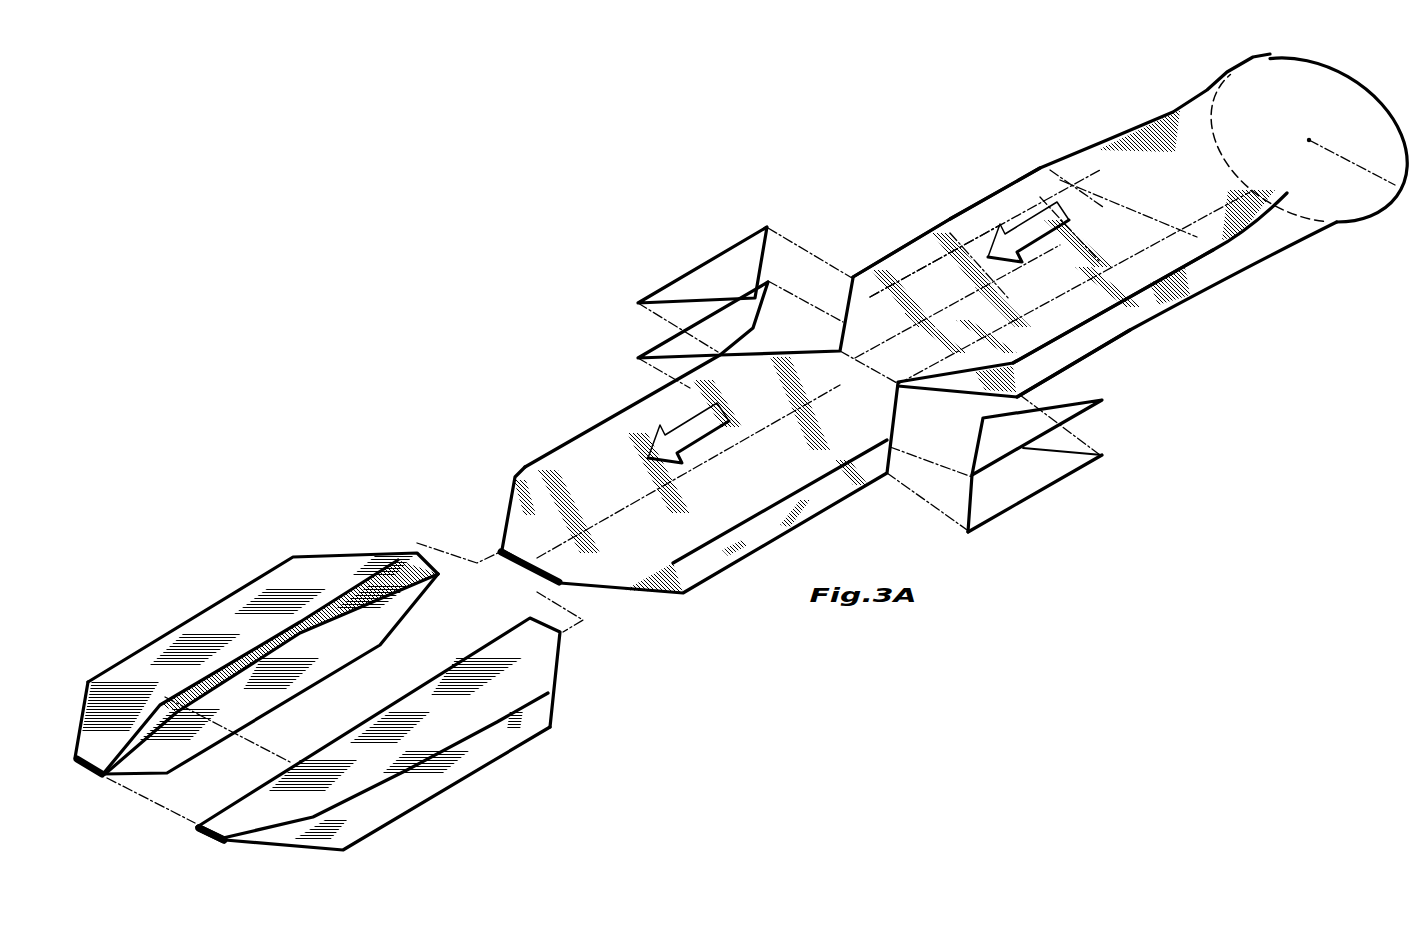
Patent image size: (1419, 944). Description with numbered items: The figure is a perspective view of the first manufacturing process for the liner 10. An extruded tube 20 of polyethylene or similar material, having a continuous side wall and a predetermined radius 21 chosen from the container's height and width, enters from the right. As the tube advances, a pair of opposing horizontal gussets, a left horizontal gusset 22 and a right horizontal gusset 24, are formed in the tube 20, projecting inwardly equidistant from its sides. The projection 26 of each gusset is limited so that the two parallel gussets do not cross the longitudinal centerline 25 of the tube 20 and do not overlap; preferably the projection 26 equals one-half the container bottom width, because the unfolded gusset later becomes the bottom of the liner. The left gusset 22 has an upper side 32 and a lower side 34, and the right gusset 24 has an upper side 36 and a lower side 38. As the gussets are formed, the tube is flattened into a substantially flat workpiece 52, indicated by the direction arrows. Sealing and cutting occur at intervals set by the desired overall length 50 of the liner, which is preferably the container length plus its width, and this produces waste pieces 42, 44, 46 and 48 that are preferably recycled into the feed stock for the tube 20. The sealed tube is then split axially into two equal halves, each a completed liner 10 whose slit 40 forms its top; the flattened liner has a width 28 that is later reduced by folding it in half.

The liner 10 is at (223, 615).
The extruded tube 20 is at (1345, 73).
The predetermined radius 21 is at (1350, 157).
The left horizontal gusset 22 is at (1150, 315).
The right horizontal gusset 24 is at (993, 203).
The longitudinal centerline 25 is at (710, 452).
The projection 26 is at (1162, 276).
The width of flattened completed liner 28 is at (492, 722).
The upper side of left gusset 32 is at (1117, 313).
The lower side of left gusset 34 is at (1088, 366).
The upper side of right gusset 36 is at (957, 217).
The lower side of right gusset 38 is at (928, 263).
The slit 40 is at (210, 807).
The waste piece 42 is at (1053, 432).
The waste piece 44 is at (1007, 503).
The waste piece 46 is at (712, 272).
The waste piece 48 is at (668, 340).
The overall length 50 is at (527, 470).
The flat workpiece 52 is at (1020, 220).